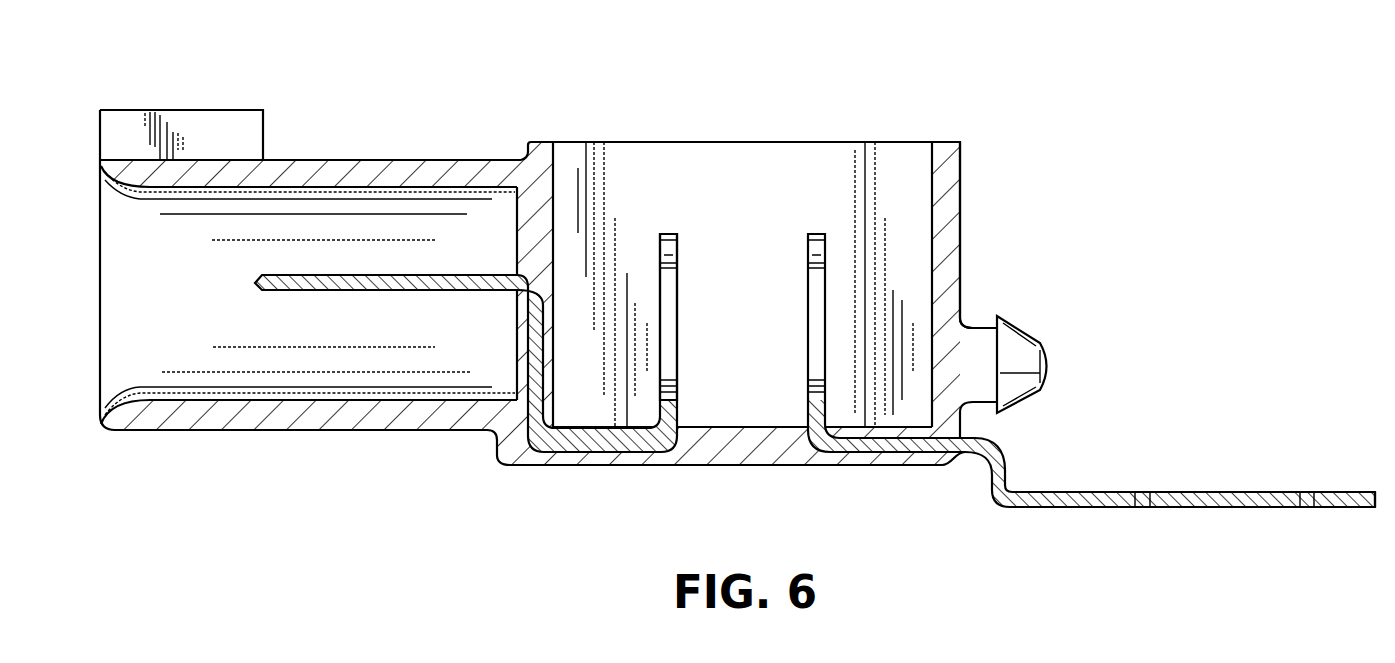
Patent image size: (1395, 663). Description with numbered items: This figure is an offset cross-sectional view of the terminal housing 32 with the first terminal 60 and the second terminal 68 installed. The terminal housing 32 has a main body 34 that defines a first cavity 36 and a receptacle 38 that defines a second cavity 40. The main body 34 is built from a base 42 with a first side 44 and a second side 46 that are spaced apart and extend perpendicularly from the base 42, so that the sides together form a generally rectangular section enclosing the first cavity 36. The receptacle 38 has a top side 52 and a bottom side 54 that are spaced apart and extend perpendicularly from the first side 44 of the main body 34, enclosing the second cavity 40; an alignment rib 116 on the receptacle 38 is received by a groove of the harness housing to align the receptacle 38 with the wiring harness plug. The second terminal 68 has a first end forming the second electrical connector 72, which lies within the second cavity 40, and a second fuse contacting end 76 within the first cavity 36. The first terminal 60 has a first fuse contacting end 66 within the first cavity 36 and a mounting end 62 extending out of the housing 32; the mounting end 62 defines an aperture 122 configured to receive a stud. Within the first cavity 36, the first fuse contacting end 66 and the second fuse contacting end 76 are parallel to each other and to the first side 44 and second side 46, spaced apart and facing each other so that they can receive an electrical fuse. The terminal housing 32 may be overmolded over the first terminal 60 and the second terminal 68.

The terminal housing 32 is at (289, 507).
The main body 34 is at (955, 170).
The first cavity 36 is at (912, 212).
The receptacle 38 is at (325, 168).
The second cavity 40 is at (89, 392).
The base 42 is at (745, 456).
The first side 44 is at (552, 218).
The second side 46 is at (950, 275).
The top side 52 is at (450, 170).
The bottom side 54 is at (178, 421).
The first terminal 60 is at (992, 491).
The mounting end 62 is at (1350, 508).
The first fuse contacting end 66 is at (815, 232).
The second terminal 68 is at (532, 434).
The second electrical connector 72 is at (378, 290).
The second fuse contacting end 76 is at (669, 232).
The alignment rib 116 is at (215, 128).
The aperture 122 is at (1200, 503).